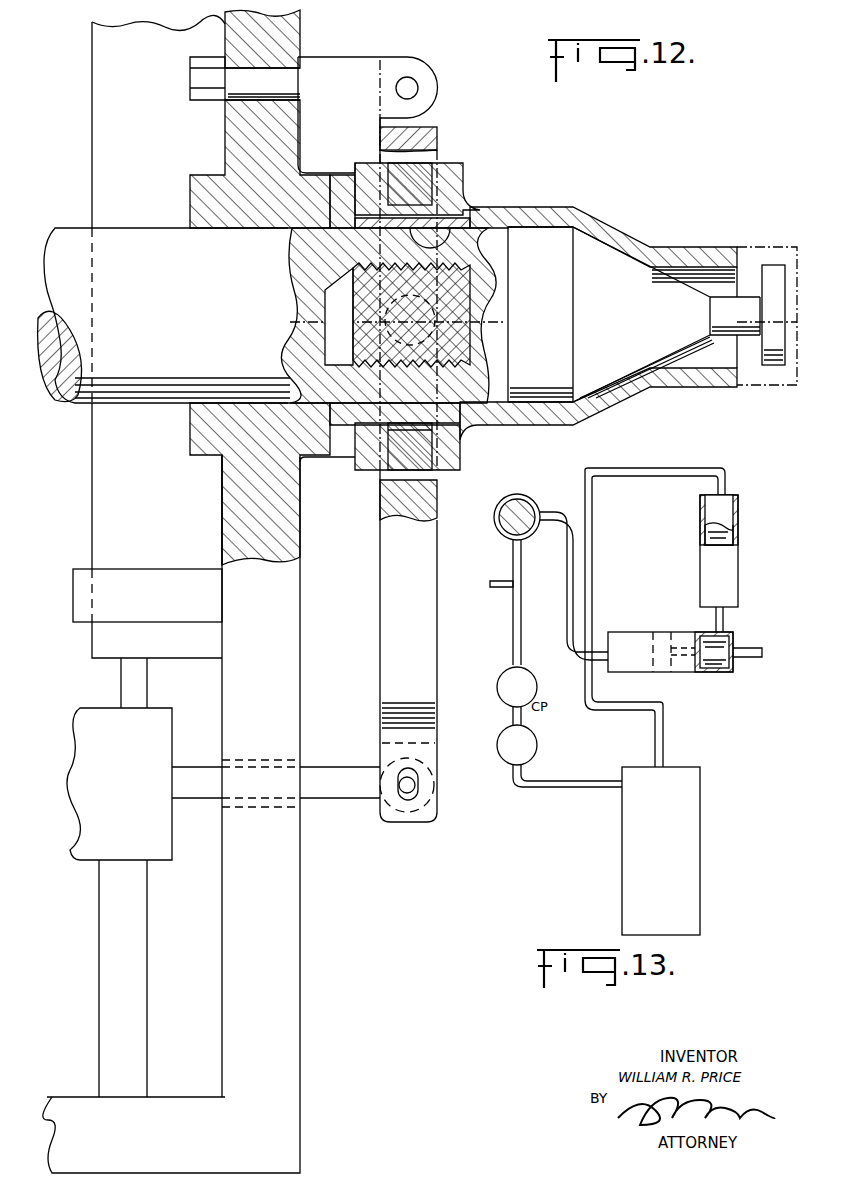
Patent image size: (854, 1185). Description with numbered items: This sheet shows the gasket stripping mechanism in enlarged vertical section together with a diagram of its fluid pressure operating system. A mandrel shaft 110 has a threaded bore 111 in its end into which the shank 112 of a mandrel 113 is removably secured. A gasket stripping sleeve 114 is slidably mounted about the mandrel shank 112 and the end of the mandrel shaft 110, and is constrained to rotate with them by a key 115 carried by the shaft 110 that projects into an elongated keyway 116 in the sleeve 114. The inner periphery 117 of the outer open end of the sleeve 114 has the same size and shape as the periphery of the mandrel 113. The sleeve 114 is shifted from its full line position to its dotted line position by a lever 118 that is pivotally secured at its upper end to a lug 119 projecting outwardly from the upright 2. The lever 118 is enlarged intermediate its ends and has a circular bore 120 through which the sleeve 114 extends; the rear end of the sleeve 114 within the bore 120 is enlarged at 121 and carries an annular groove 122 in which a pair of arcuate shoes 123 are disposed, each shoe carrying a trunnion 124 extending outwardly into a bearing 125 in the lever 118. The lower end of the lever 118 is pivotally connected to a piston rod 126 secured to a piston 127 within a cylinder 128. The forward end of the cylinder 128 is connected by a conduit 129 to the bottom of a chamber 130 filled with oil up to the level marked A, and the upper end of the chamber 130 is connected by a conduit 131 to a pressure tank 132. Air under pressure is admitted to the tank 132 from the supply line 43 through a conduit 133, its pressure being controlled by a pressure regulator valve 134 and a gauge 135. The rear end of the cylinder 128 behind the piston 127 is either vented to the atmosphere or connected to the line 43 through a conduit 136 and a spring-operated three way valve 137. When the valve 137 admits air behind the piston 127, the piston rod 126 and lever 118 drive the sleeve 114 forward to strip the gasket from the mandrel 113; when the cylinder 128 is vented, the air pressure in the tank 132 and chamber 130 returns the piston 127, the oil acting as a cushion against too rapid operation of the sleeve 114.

In FIG. 12, the upright 2 is at (285, 690).
In FIG. 13, the supply line 43 is at (493, 584).
In FIG. 12, the mandrel shaft 110 is at (150, 245).
In FIG. 12, the threaded bore 111 is at (492, 425).
In FIG. 12, the shank 112 is at (634, 314).
In FIG. 12, the mandrel 113 is at (770, 268).
In FIG. 12, the gasket stripping sleeve 114 is at (590, 222).
In FIG. 12, the key 115 is at (432, 222).
In FIG. 12, the elongated keyway 116 is at (463, 225).
In FIG. 12, the inner periphery 117 is at (700, 265).
In FIG. 12, the lever 118 is at (392, 600).
In FIG. 12, the lug 119 is at (345, 68).
In FIG. 12, the circular bore 120 is at (383, 475).
In FIG. 12, the enlarged rear end 121 is at (452, 178).
In FIG. 12, the annular groove 122 is at (450, 448).
In FIG. 12, the arcuate shoes 123 is at (418, 178).
In FIG. 12, the trunnion 124 is at (465, 290).
In FIG. 12, the bearing 125 is at (462, 330).
In FIG. 12, the piston rod 126 is at (350, 785).
In FIG. 13, the piston rod 126 is at (760, 660).
In FIG. 13, the piston 127 is at (663, 668).
In FIG. 12, the cylinder 128 is at (119, 784).
In FIG. 13, the cylinder 128 is at (618, 634).
In FIG. 13, the conduit 129 is at (722, 620).
In FIG. 13, the chamber 130 is at (733, 565).
In FIG. 13, the conduit 131 is at (590, 592).
In FIG. 13, the pressure tank 132 is at (690, 832).
In FIG. 13, the conduit 133 is at (516, 632).
In FIG. 13, the pressure regulator valve 134 is at (535, 680).
In FIG. 13, the gauge 135 is at (532, 750).
In FIG. 13, the conduit 136 is at (520, 563).
In FIG. 13, the three way valve 137 is at (500, 498).
In FIG. 13, the oil level A is at (727, 525).